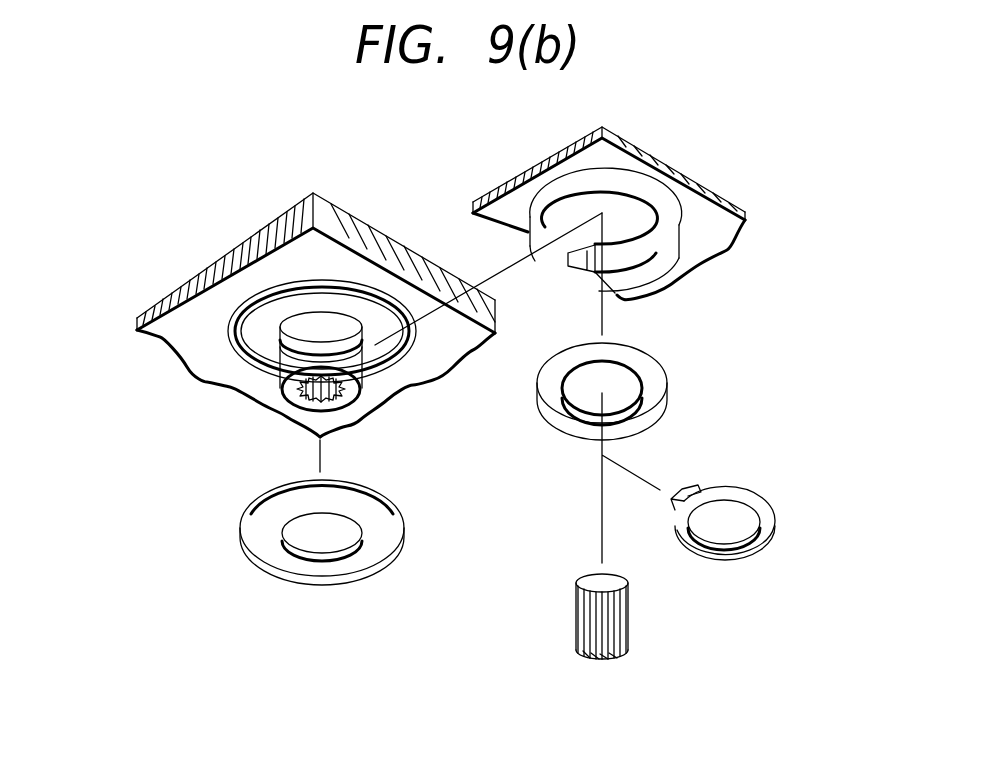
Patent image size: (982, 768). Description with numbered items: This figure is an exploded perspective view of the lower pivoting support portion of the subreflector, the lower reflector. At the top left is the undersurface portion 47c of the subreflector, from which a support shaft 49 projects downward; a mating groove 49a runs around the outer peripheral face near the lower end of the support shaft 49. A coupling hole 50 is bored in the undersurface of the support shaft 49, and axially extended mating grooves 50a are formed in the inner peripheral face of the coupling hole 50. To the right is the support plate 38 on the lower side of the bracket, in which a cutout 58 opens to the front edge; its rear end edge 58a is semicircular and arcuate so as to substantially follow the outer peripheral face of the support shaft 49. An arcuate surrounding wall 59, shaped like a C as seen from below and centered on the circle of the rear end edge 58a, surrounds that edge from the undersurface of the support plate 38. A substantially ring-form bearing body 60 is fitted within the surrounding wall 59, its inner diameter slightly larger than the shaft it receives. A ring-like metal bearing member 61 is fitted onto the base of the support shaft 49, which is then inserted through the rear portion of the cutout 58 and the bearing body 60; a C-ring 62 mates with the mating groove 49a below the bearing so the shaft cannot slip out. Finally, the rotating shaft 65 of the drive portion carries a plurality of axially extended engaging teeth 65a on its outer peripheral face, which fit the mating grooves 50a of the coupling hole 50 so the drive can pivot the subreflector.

The undersurface portion 47c is at (300, 212).
The support shaft 49 is at (298, 327).
The mating groove 49a is at (280, 350).
The coupling hole 50 is at (360, 322).
The mating grooves 50a is at (313, 377).
The support plate 38 is at (622, 140).
The cutout 58 is at (572, 260).
The rear end edge 58a is at (632, 195).
The arcuate surrounding wall 59 is at (665, 202).
The bearing body 60 is at (660, 368).
The bearing member 61 is at (347, 570).
The C-ring 62 is at (767, 517).
The rotating shaft 65 is at (613, 662).
The engaging teeth 65a is at (597, 576).